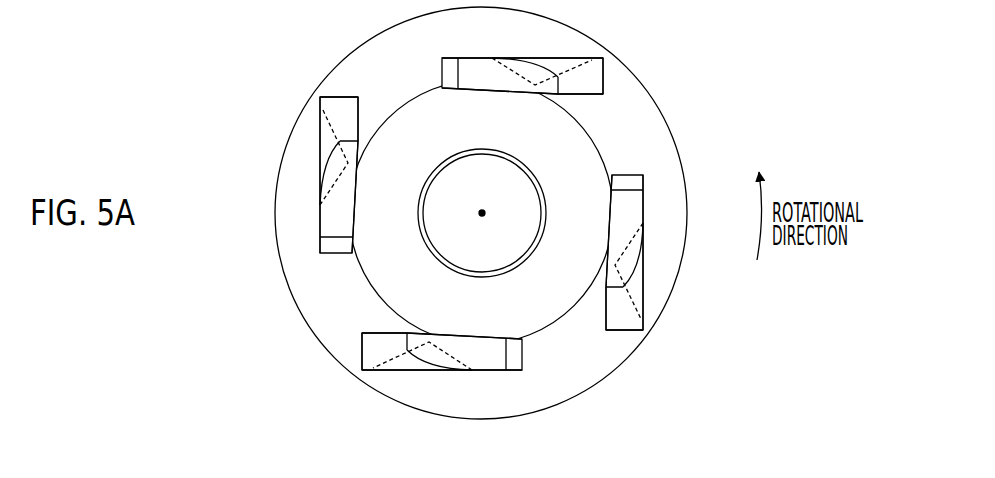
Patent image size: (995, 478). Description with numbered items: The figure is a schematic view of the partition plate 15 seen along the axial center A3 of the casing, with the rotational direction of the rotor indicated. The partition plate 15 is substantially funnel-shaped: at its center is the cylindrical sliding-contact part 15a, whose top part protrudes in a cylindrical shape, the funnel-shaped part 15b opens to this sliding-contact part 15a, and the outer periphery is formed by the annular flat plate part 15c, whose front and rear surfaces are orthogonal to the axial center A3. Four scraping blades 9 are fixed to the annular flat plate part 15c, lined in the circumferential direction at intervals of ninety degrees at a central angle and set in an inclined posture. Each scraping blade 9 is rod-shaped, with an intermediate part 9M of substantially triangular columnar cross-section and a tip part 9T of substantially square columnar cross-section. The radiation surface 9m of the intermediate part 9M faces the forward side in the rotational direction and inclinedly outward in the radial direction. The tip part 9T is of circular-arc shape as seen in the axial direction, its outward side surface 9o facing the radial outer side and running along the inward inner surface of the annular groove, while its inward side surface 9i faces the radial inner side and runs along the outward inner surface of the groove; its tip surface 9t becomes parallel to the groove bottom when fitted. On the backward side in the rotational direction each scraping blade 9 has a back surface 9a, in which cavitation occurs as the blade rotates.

The partition plate 15 is at (330, 72).
The cylindrical sliding-contact part 15a is at (450, 168).
The funnel-shaped part 15b is at (428, 263).
The annular flat plate part 15c is at (320, 323).
The scraping blade 9 is at (452, 53).
The tip surface 9t is at (340, 254).
The intermediate part 9M is at (318, 149).
The radiation surface 9m is at (320, 130).
The tip part 9T is at (318, 208).
The outward side surface 9o is at (320, 216).
The inward side surface 9i is at (353, 213).
The back surface 9a is at (343, 198).
The axial center A3 is at (484, 215).